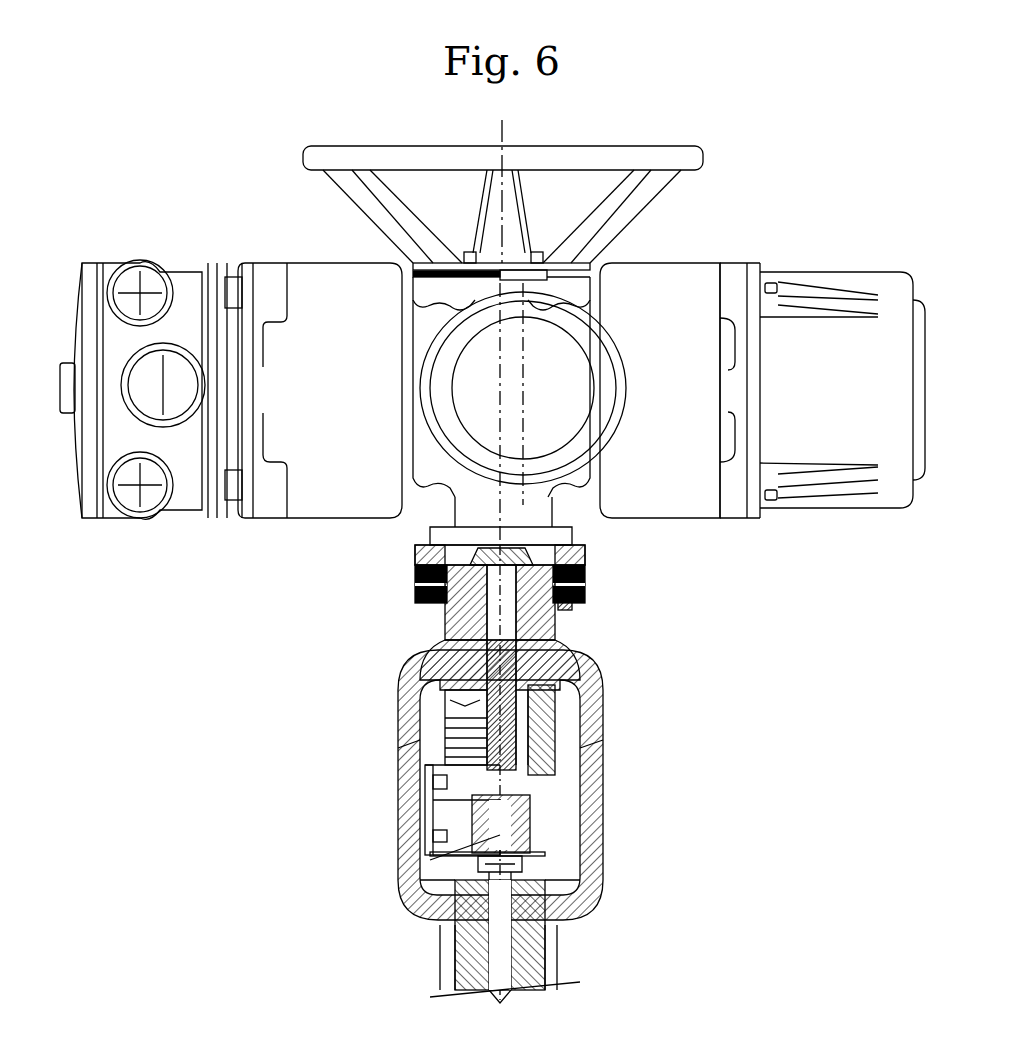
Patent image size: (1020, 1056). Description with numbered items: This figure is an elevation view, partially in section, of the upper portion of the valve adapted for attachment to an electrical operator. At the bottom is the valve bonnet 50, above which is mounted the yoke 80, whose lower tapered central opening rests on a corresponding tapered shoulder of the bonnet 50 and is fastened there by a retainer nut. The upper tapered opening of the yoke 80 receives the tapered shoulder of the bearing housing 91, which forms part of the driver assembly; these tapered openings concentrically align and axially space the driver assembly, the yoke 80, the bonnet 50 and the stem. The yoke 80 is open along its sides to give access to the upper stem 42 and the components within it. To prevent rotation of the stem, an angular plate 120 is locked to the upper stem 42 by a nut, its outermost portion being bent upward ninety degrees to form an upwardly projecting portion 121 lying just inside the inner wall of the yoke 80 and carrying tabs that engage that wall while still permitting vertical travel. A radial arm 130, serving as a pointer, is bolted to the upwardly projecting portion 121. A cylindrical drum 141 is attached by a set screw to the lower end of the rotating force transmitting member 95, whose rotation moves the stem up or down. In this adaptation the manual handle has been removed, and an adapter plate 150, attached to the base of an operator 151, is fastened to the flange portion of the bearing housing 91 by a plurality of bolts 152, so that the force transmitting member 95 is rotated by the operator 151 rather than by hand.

The operator 151 is at (385, 497).
The adapter plate 150 is at (425, 553).
The bolts 152 is at (420, 597).
The bearing housing 91 is at (585, 568).
The force transmitting member 95 is at (445, 628).
The radial arm 130 is at (440, 768).
The cylindrical drum 141 is at (555, 730).
The upper stem 42 is at (525, 808).
The upwardly projecting portion 121 is at (430, 815).
The angular plate 120 is at (445, 853).
The yoke 80 is at (600, 848).
The bonnet 50 is at (555, 960).